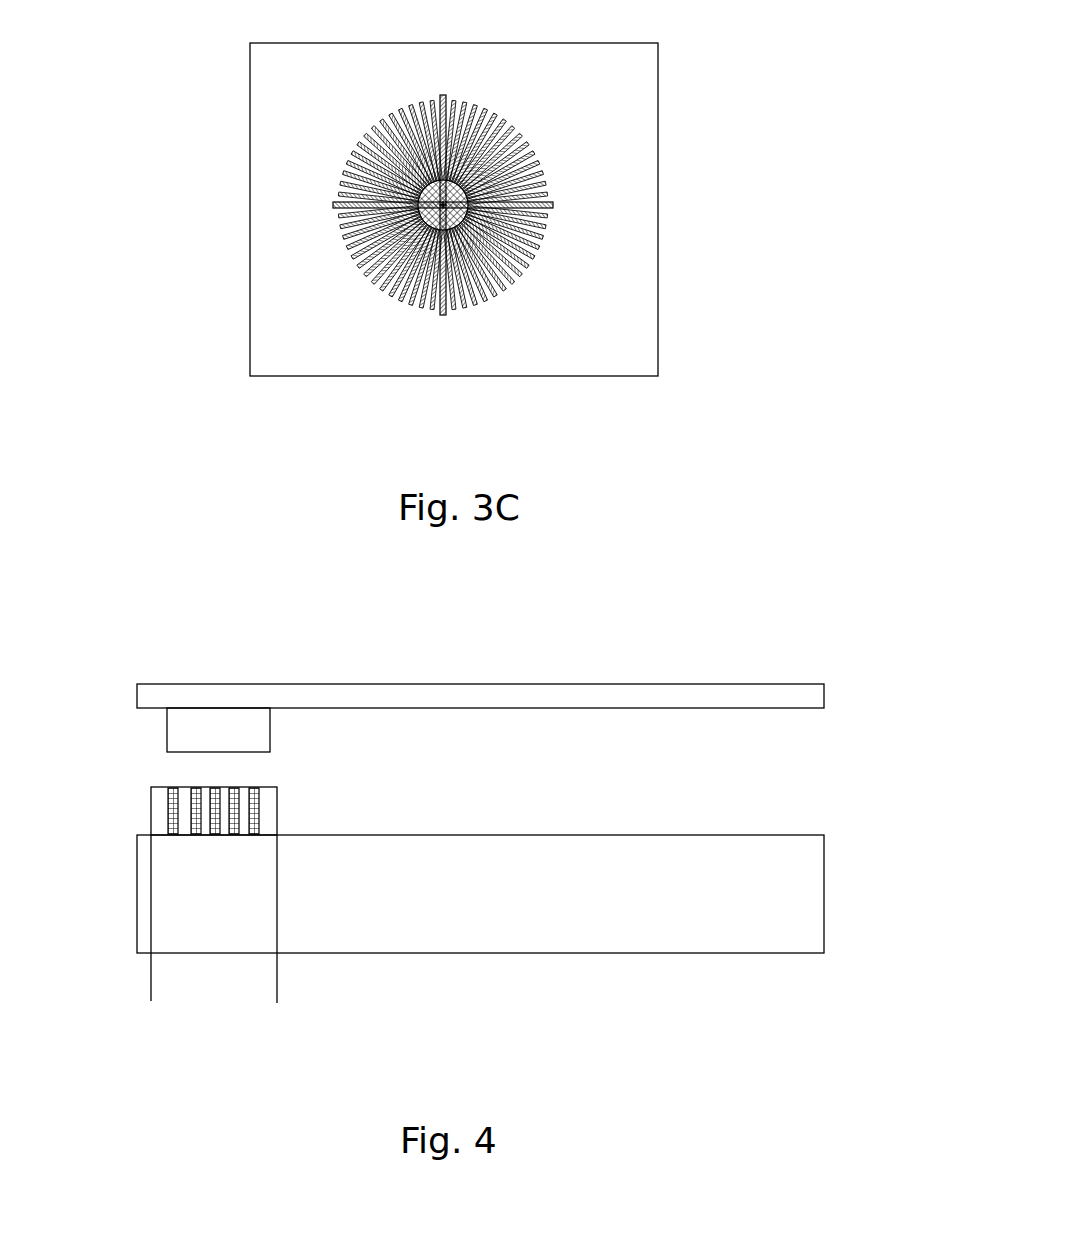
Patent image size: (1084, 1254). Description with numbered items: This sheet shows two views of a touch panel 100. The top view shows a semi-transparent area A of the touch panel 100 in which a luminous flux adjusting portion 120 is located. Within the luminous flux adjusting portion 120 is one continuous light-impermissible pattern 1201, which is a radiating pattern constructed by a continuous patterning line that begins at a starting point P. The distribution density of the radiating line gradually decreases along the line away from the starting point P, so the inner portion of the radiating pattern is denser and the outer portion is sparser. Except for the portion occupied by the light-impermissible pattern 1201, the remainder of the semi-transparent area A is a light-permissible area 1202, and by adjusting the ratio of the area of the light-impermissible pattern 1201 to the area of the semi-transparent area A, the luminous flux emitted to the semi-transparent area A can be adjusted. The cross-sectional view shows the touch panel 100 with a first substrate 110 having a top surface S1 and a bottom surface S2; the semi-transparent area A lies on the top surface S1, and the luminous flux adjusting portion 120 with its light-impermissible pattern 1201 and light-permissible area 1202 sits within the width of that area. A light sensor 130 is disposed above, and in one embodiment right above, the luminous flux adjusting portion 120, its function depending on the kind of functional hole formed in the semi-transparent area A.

In FIG. 4, the touch panel 100 is at (763, 630).
In FIG. 4, the first substrate 110 is at (150, 898).
In FIG. 3C, the luminous flux adjusting portion 120 is at (530, 205).
In FIG. 4, the luminous flux adjusting portion 120 is at (288, 806).
In FIG. 3C, the light-impermissible pattern 1201 is at (542, 233).
In FIG. 4, the light-impermissible pattern 1201 is at (260, 825).
In FIG. 3C, the light-permissible area 1202 is at (547, 140).
In FIG. 4, the light-permissible area 1202 is at (265, 798).
In FIG. 4, the light sensor 130 is at (175, 732).
In FIG. 3C, the starting point P is at (340, 207).
In FIG. 4, the top surface S1 is at (717, 835).
In FIG. 4, the bottom surface S2 is at (713, 954).
In FIG. 4, the semi-transparent area A is at (277, 988).